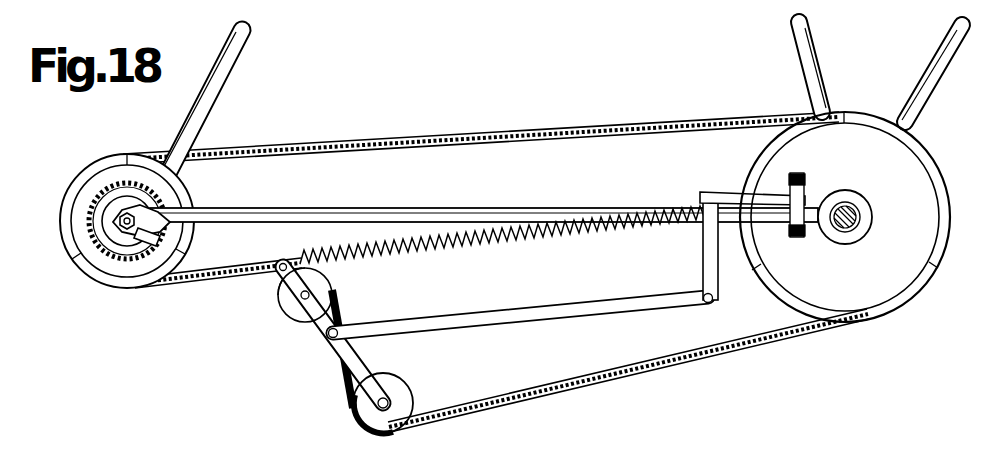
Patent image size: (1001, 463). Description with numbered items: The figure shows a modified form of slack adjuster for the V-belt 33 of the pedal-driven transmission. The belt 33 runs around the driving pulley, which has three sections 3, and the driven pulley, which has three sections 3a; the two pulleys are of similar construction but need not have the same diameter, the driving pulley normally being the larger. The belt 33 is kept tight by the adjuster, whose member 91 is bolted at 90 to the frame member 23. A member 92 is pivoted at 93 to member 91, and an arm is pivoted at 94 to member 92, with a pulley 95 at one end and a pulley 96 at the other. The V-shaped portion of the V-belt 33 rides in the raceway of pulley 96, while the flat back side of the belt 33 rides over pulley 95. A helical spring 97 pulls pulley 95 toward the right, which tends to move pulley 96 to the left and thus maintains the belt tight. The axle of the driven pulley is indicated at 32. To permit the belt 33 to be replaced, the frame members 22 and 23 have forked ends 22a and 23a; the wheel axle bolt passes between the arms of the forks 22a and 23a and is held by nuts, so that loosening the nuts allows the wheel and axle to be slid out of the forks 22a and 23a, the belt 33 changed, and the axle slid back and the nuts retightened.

The driving pulley section 3 is at (946, 247).
The driven pulley section 3a is at (105, 165).
The frame member 22 is at (240, 62).
The forked end 22a is at (108, 247).
The frame member 23 is at (458, 207).
The forked end 23a is at (130, 248).
The axle 32 is at (864, 208).
The V-belt 33 is at (575, 120).
The bolt 90 is at (790, 180).
The member 91 is at (703, 264).
The member 92 is at (525, 318).
The pivot 93 is at (702, 305).
The pivot 94 is at (318, 320).
The pulley 95 is at (280, 300).
The pulley 96 is at (362, 406).
The helical spring 97 is at (525, 254).